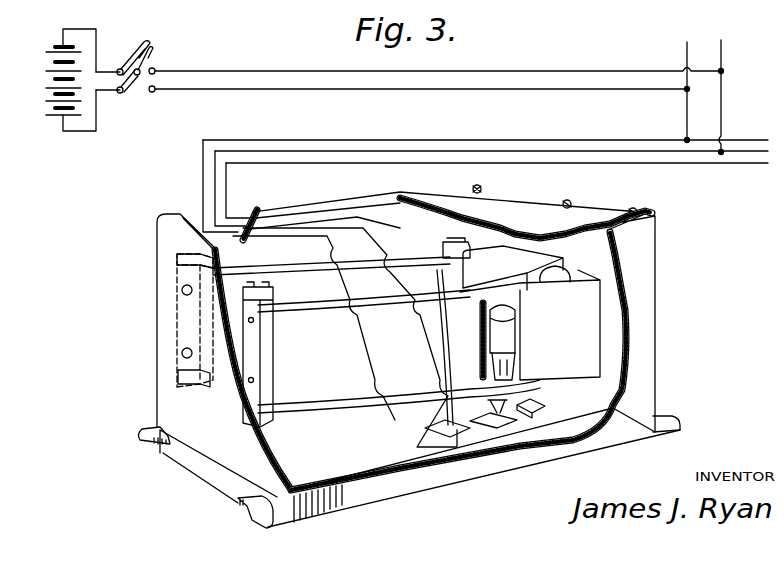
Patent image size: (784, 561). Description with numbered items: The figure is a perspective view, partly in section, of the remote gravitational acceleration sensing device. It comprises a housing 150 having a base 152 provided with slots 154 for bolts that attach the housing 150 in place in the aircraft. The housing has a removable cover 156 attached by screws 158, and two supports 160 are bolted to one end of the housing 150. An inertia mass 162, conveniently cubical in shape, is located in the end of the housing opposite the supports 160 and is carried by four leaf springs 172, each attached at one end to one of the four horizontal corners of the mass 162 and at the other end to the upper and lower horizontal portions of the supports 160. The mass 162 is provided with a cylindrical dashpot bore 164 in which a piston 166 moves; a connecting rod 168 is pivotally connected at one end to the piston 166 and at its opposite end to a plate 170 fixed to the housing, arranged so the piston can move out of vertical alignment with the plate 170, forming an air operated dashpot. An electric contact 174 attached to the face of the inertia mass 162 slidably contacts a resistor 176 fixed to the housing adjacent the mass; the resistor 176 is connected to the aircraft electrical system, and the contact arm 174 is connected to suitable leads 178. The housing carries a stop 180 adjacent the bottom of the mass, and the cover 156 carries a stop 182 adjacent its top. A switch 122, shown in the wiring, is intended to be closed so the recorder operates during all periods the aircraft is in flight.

The switch 122 is at (149, 35).
The housing 150 is at (163, 252).
The base 152 is at (195, 472).
The slots 154 is at (158, 445).
The removable cover 156 is at (402, 194).
The screws 158 is at (476, 186).
The supports 160 is at (177, 332).
The inertia mass 162 is at (545, 260).
The cylindrical dashpot bore 164 is at (510, 307).
The piston 166 is at (517, 337).
The connecting rod 168 is at (527, 374).
The plate 170 is at (495, 425).
The leaf springs 172 is at (293, 268).
The electric contact 174 is at (445, 330).
The resistor 176 is at (448, 372).
The leads 178 is at (726, 164).
The stop 180 is at (545, 410).
The stop 182 is at (527, 233).